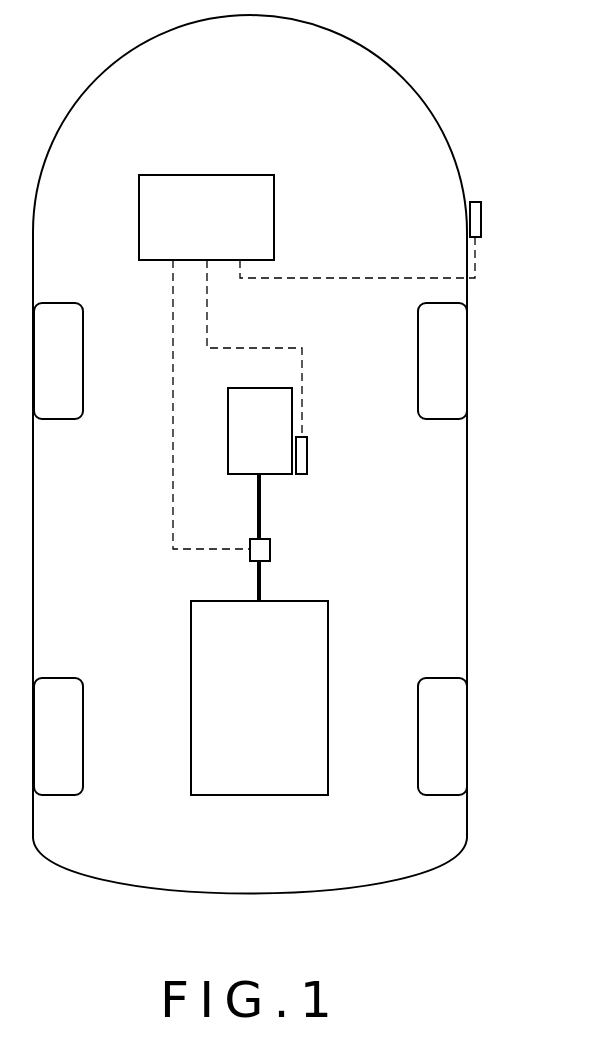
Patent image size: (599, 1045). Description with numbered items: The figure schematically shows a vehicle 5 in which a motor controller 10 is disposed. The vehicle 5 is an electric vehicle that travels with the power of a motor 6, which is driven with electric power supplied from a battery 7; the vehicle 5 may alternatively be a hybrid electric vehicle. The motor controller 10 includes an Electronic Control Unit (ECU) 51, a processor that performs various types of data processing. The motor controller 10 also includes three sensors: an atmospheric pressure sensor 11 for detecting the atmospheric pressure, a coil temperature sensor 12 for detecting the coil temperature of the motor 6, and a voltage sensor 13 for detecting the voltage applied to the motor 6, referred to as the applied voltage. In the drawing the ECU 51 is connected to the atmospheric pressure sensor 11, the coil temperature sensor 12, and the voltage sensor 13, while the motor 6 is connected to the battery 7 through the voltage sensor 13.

The vehicle 5 is at (457, 90).
The motor controller 10 is at (248, 152).
The Electronic Control Unit (ECU) 51 is at (275, 214).
The atmospheric pressure sensor 11 is at (482, 216).
The motor 6 is at (228, 425).
The coil temperature sensor 12 is at (308, 456).
The voltage sensor 13 is at (271, 548).
The battery 7 is at (329, 695).